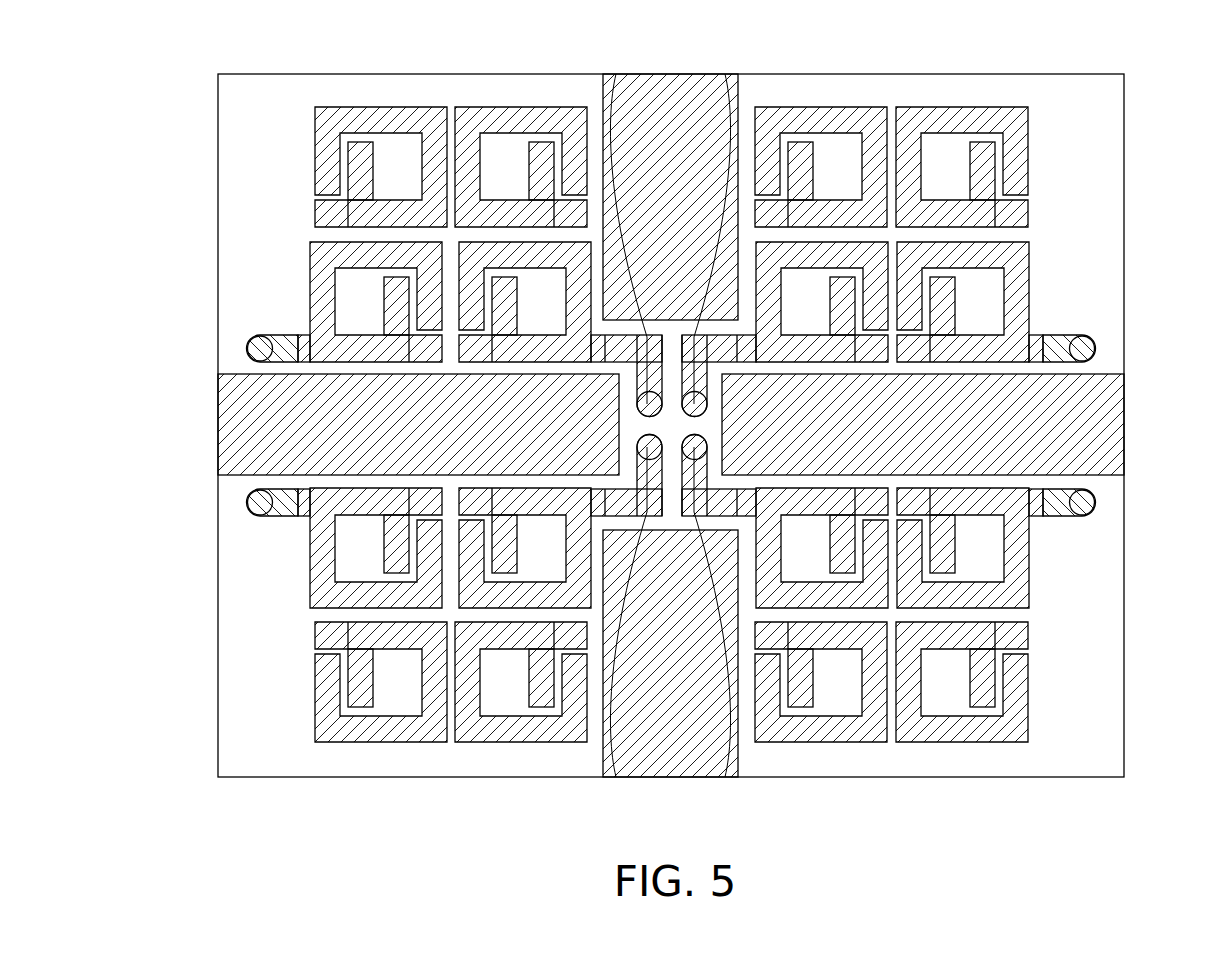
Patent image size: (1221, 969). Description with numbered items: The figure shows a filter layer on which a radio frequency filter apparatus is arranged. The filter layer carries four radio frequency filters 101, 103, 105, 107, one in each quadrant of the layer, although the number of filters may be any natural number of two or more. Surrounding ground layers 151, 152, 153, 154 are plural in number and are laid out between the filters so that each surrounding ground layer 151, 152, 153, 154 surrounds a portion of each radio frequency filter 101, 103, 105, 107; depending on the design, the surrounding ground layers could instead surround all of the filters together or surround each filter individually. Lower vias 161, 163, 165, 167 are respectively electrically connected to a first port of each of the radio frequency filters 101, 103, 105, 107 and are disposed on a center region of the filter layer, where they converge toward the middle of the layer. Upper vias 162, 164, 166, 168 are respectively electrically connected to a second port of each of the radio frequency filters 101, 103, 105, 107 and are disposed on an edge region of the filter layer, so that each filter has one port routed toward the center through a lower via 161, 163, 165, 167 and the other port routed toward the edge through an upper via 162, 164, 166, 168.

The radio frequency filter 101 is at (416, 106).
The radio frequency filter 103 is at (922, 106).
The radio frequency filter 105 is at (416, 746).
The radio frequency filter 107 is at (922, 746).
The surrounding ground layer 151 is at (670, 103).
The surrounding ground layer 152 is at (232, 429).
The surrounding ground layer 153 is at (1105, 429).
The surrounding ground layer 154 is at (670, 747).
The lower via 161 is at (616, 74).
The upper via 162 is at (258, 349).
The lower via 163 is at (725, 74).
The upper via 164 is at (1085, 349).
The lower via 165 is at (616, 777).
The upper via 166 is at (258, 503).
The lower via 167 is at (725, 777).
The upper via 168 is at (1085, 503).